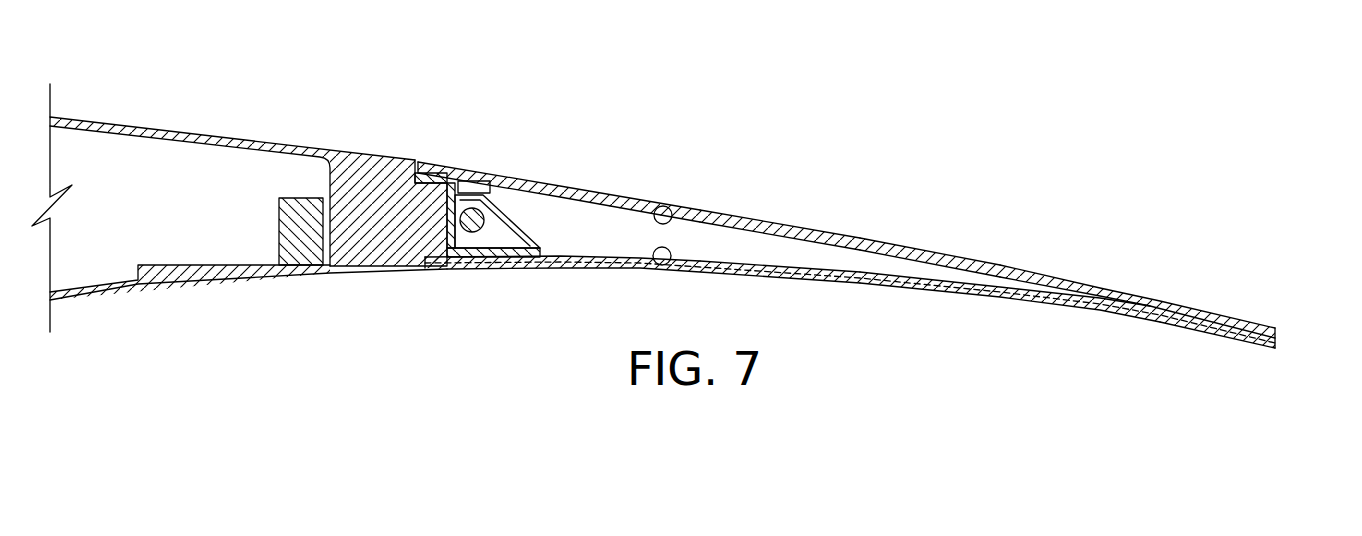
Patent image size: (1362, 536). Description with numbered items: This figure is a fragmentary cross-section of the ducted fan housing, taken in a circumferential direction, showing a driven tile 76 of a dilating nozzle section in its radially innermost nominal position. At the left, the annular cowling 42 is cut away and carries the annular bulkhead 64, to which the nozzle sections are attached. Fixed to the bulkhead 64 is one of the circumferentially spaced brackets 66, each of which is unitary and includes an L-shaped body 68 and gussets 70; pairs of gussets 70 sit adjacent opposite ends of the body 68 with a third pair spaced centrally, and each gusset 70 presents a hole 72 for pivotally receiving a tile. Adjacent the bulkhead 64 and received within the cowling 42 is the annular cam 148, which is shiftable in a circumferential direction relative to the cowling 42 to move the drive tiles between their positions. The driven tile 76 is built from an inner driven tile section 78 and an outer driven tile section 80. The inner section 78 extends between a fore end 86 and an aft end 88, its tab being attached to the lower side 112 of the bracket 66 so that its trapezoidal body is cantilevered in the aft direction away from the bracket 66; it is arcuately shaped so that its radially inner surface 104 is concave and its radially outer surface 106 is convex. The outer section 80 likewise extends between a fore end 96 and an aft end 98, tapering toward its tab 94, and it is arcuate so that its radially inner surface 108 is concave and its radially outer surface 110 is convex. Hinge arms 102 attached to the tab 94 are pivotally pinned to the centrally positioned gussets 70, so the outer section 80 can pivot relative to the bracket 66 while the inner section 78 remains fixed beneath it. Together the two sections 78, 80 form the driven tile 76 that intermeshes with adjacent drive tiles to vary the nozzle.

The annular cowling 42 is at (243, 136).
The annular bulkhead 64 is at (392, 193).
The bracket 66 is at (503, 246).
The L-shaped body 68 is at (448, 258).
The gusset 70 is at (527, 233).
The hole 72 is at (485, 219).
The driven tile 76 is at (917, 248).
The inner driven tile section 78 is at (920, 292).
The outer driven tile section 80 is at (1033, 273).
The fore end 86 is at (376, 304).
The aft end 88 is at (1284, 351).
The tab 94 is at (555, 195).
The fore end 96 is at (385, 116).
The aft end 98 is at (1302, 275).
The hinge arm 102 is at (477, 187).
The radially inner surface 104 is at (797, 277).
The radially outer surface 106 is at (670, 257).
The radially inner surface 108 is at (673, 213).
The radially outer surface 110 is at (797, 223).
The lower side 112 is at (530, 257).
The annular cam 148 is at (297, 248).